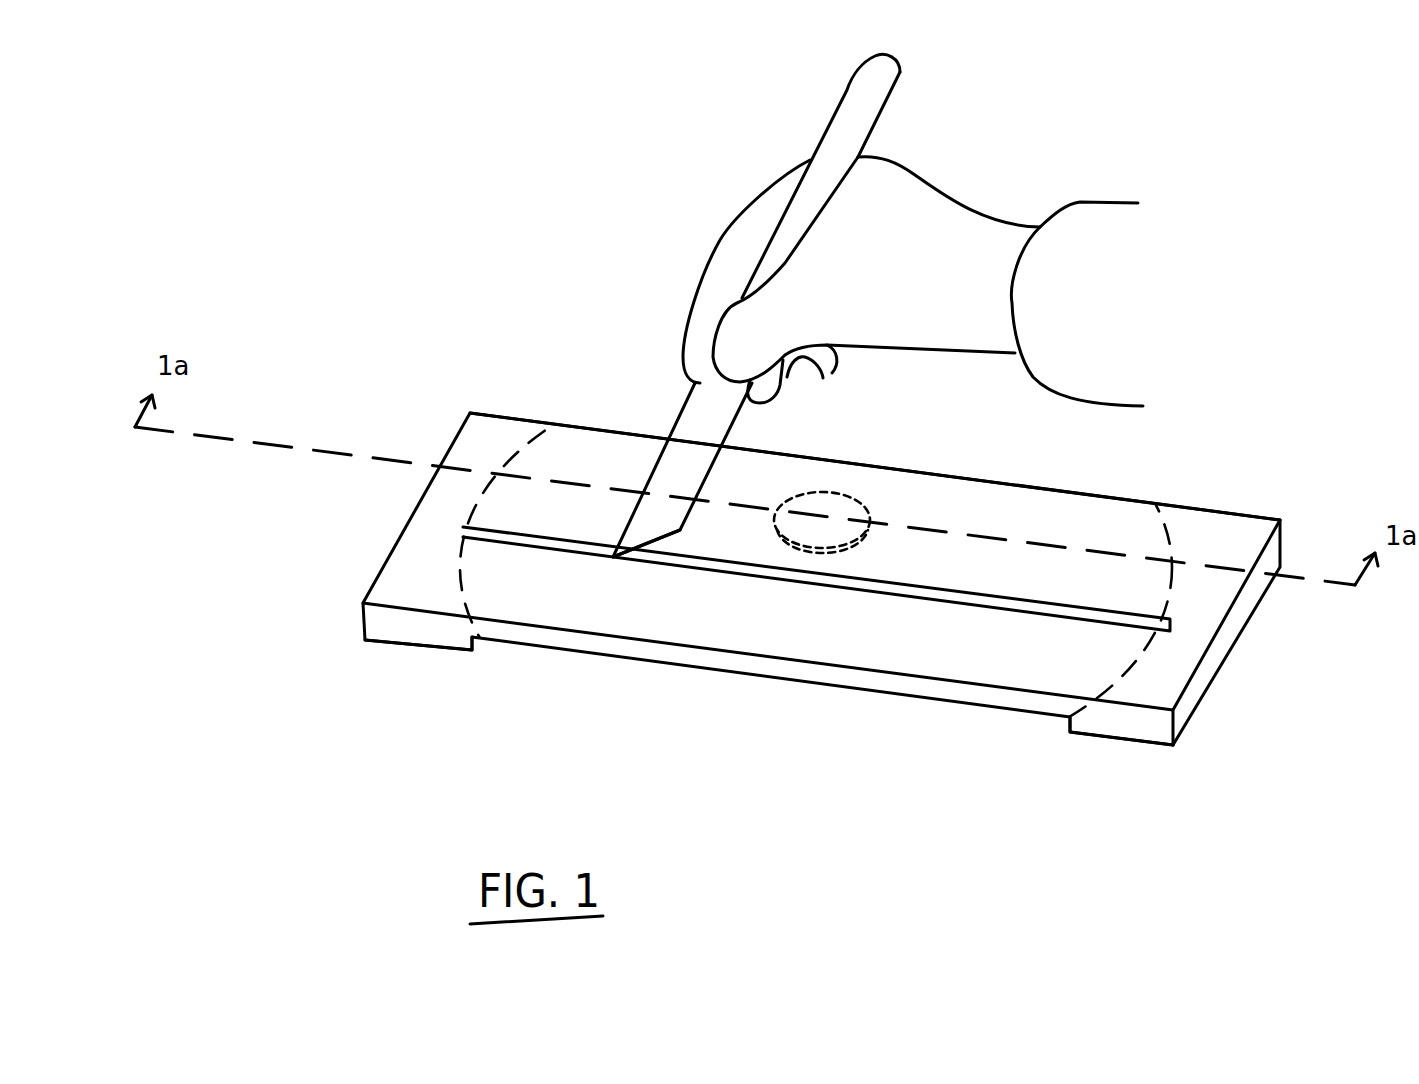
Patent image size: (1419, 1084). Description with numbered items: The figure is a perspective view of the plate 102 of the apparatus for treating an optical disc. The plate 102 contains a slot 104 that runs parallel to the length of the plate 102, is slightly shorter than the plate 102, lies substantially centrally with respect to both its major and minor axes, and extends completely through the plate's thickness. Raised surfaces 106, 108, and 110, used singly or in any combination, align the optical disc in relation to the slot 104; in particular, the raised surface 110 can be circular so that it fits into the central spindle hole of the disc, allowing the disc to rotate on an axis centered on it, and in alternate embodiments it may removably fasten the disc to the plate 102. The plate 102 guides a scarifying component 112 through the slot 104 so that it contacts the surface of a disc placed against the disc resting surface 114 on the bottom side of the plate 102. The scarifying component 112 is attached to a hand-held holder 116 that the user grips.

The plate 102 is at (1198, 530).
The slot 104 is at (462, 533).
The raised surface 106 is at (475, 637).
The raised surface 108 is at (1070, 722).
The raised surface 110 is at (823, 515).
The scarifying component 112 is at (646, 450).
The disc resting surface 114 is at (583, 440).
The hand-held holder 116 is at (855, 132).